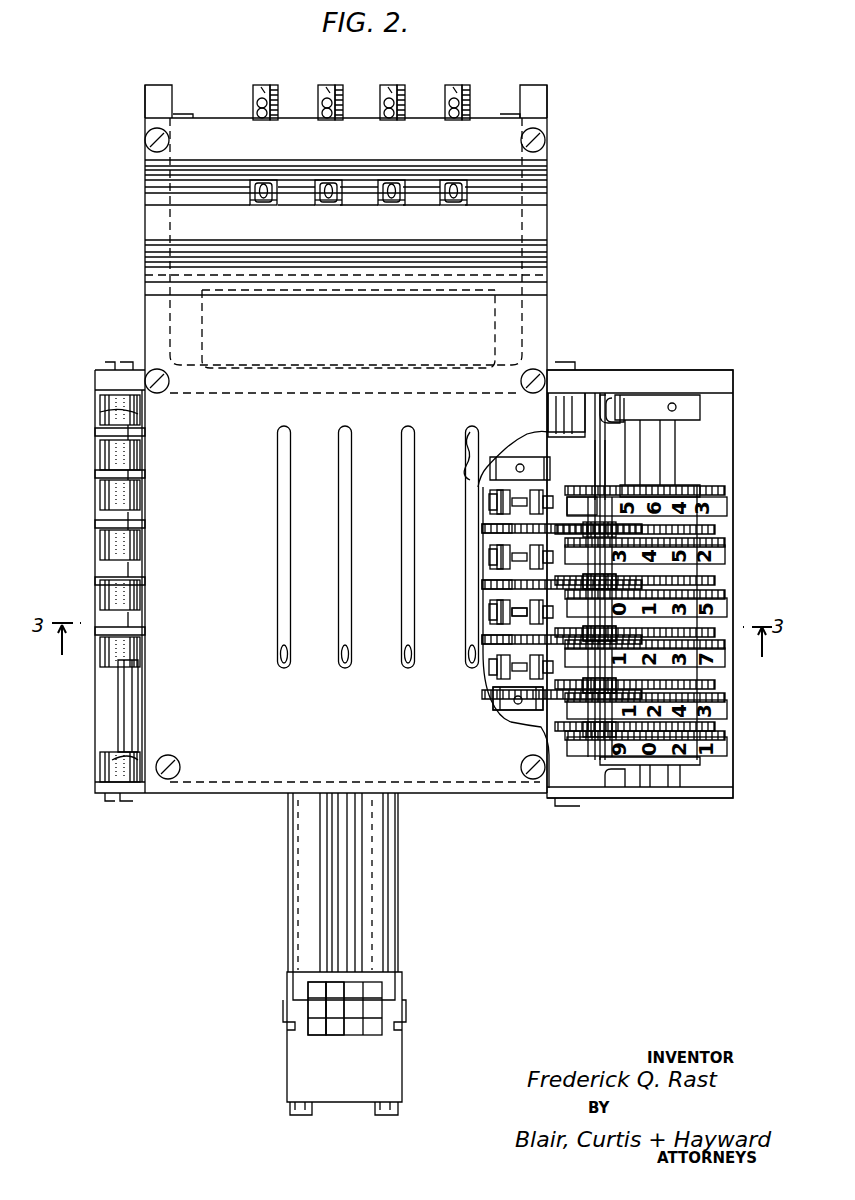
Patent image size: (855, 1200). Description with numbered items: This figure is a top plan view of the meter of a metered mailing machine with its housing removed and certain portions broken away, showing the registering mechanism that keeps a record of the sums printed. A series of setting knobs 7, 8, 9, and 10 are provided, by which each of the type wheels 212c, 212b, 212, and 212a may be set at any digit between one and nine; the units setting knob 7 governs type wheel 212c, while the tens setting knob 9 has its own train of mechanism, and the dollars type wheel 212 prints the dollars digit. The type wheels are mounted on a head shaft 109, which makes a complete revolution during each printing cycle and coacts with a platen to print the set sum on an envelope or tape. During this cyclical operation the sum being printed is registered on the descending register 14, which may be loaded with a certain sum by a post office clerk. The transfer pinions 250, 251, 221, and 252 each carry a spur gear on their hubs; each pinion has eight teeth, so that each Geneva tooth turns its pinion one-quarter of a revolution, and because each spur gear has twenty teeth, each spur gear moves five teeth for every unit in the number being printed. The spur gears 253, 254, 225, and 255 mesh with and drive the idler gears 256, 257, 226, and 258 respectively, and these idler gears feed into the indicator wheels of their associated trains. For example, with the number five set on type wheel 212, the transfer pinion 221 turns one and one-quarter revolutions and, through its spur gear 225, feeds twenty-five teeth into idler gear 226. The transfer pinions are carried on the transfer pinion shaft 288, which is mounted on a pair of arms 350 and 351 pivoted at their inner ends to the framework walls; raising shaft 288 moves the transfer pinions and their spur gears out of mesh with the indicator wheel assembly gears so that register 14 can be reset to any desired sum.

The setting knob 7 is at (470, 655).
The setting knob 8 is at (343, 655).
The setting knob 9 is at (405, 655).
The setting knob 10 is at (281, 655).
The descending register 14 is at (748, 557).
The head shaft 109 is at (285, 858).
The type wheel 212 is at (352, 1035).
The type wheel 212a is at (378, 995).
The type wheel 212b is at (338, 1035).
The type wheel 212c is at (315, 1030).
The transfer pinion 221 is at (495, 598).
The spur gear 225 is at (496, 618).
The idler gear 226 is at (575, 628).
The transfer pinion 250 is at (495, 489).
The transfer pinion 251 is at (495, 547).
The transfer pinion 252 is at (495, 636).
The spur gear 253 is at (495, 524).
The spur gear 254 is at (495, 574).
The spur gear 255 is at (495, 690).
The idler gear 256 is at (558, 525).
The idler gear 257 is at (575, 576).
The idler gear 258 is at (575, 682).
The transfer pinion shaft 288 is at (598, 450).
The arm 350 is at (622, 405).
The arm 351 is at (622, 775).